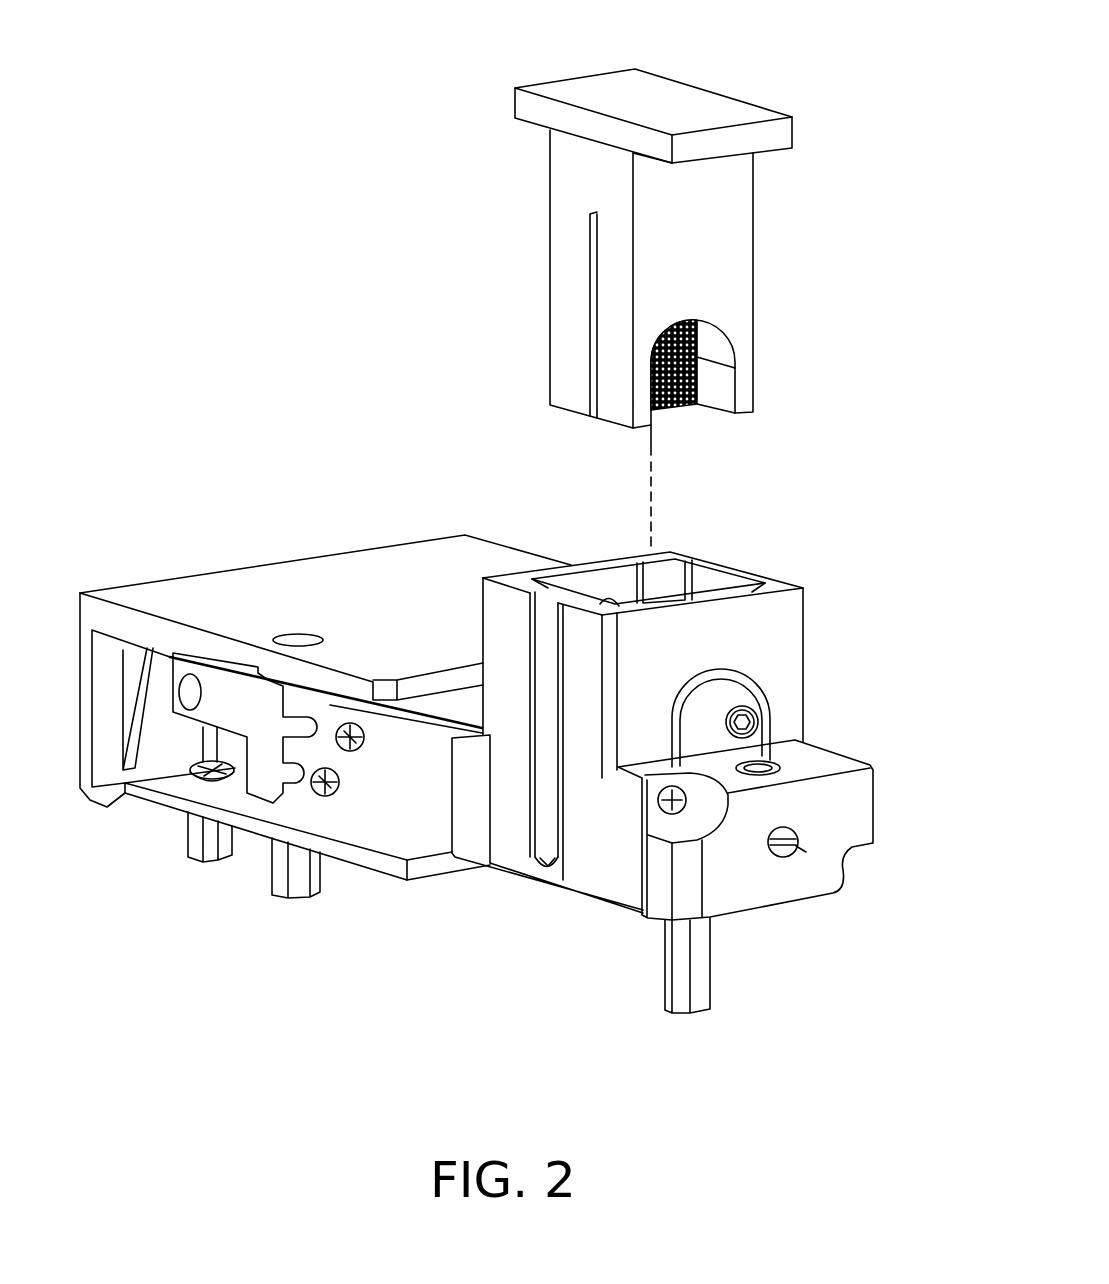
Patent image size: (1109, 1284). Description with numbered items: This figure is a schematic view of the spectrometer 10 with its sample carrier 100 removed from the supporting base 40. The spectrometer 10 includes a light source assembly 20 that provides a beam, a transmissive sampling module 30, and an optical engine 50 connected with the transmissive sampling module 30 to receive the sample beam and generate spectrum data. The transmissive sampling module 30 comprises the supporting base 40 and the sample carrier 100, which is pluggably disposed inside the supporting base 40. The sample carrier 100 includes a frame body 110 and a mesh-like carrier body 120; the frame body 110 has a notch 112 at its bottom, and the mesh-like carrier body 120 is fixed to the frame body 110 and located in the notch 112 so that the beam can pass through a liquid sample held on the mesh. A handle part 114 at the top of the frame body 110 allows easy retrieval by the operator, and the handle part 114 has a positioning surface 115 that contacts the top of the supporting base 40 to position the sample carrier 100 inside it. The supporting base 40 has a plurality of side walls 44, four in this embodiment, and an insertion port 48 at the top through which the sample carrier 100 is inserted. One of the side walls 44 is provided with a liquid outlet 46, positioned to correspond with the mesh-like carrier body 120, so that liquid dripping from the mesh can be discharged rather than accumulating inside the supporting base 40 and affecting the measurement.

The spectrometer 10 is at (895, 1079).
The light source assembly 20 is at (858, 786).
The transmissive sampling module 30 is at (931, 323).
The supporting base 40 is at (707, 649).
The side walls 44 is at (730, 572).
The liquid outlet 46 is at (532, 870).
The insertion port 48 is at (604, 592).
The optical engine 50 is at (300, 568).
The sample carrier 100 is at (745, 274).
The frame body 110 is at (745, 246).
The notch 112 is at (722, 405).
The handle part 114 is at (784, 131).
The positioning surface 115 is at (658, 166).
The mesh-like carrier body 120 is at (676, 404).